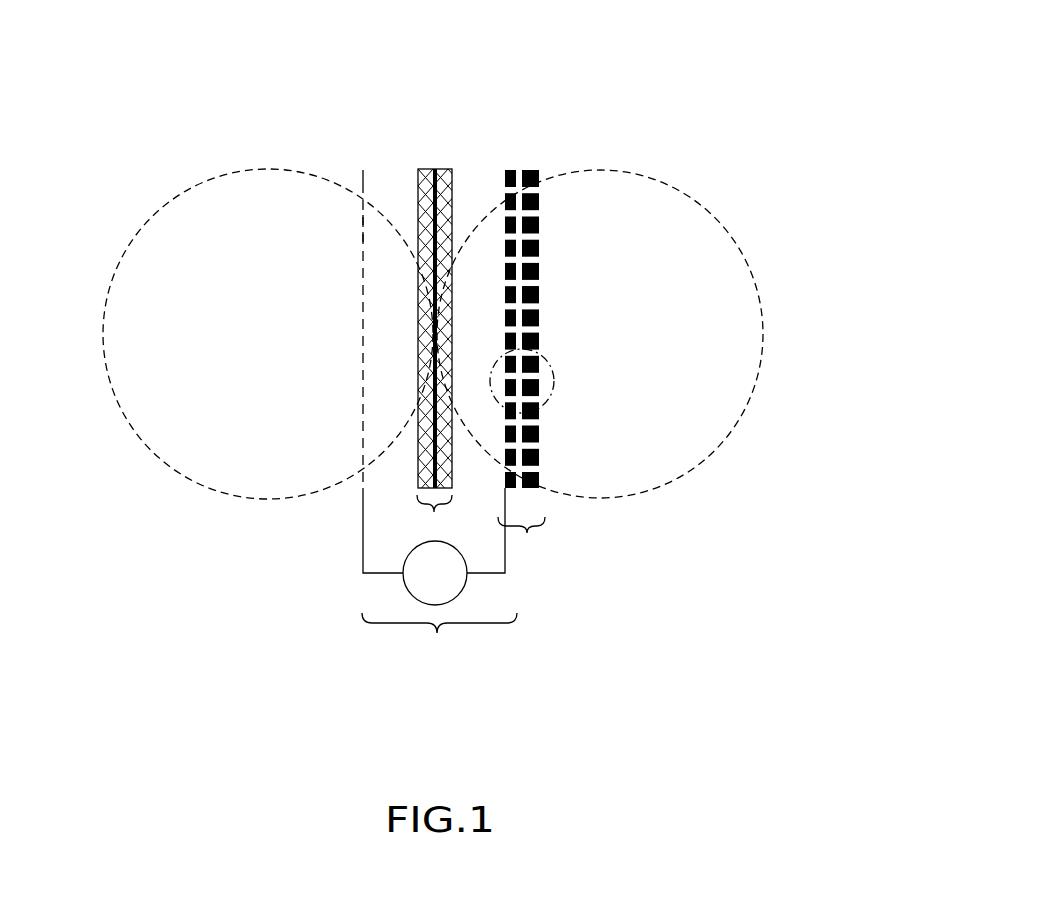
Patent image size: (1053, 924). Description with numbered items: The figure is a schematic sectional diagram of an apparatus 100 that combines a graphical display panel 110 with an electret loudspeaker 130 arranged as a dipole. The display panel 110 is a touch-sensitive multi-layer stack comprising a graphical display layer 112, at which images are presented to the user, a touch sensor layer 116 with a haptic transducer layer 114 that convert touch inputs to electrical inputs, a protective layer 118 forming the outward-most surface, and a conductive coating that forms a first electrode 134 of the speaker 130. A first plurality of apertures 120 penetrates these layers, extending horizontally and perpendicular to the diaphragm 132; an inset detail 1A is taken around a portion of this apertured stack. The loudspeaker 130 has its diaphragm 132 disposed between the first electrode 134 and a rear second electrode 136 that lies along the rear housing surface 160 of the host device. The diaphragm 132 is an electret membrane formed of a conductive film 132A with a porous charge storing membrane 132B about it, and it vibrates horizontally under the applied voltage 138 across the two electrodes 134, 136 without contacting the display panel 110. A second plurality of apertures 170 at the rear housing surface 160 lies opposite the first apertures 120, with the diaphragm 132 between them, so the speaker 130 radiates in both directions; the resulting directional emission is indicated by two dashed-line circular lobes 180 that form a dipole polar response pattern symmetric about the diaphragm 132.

The apparatus 100 is at (827, 674).
The graphical display panel 110 is at (527, 533).
The graphical display layer 112 is at (514, 168).
The haptic transducer layer 114 is at (523, 498).
The touch sensor layer 116 is at (539, 499).
The protective layer 118 is at (540, 168).
The first plurality of apertures 120 is at (545, 307).
The loudspeaker 130 is at (437, 633).
The diaphragm 132 is at (435, 512).
The conductive film 132A is at (421, 241).
The porous charge storing membrane 132B is at (431, 276).
The first electrode 134 is at (503, 168).
The second electrode 136 is at (358, 168).
The voltage 138 is at (407, 590).
The rear housing surface 160 is at (361, 523).
The second plurality of apertures 170 is at (361, 228).
The circular lobes 180 is at (701, 205).
The detail view 1A is at (558, 384).